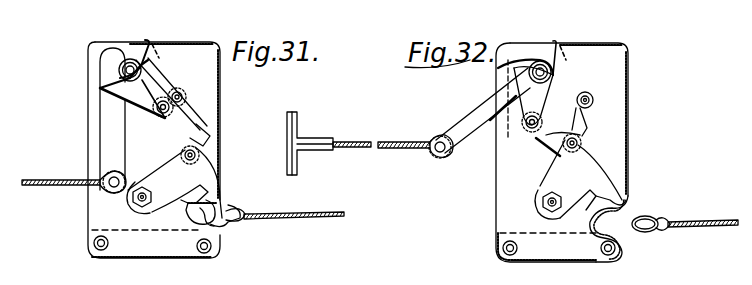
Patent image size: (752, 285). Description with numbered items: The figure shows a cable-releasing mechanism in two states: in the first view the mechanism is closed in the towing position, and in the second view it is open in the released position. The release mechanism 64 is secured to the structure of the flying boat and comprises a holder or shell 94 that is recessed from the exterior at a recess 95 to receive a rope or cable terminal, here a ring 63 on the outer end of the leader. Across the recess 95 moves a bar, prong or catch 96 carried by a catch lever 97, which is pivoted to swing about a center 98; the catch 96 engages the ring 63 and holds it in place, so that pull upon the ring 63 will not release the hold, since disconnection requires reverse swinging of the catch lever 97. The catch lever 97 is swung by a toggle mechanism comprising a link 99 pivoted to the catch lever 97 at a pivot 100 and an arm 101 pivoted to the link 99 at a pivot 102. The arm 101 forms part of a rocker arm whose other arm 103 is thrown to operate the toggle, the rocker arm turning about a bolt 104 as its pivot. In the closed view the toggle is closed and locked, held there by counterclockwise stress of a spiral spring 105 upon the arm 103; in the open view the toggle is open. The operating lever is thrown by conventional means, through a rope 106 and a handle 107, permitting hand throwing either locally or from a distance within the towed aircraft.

In FIG. 31, the ring 63 is at (218, 228).
In FIG. 32, the ring 63 is at (656, 221).
In FIG. 31, the release mechanism 64 is at (232, 109).
In FIG. 32, the release mechanism 64 is at (645, 99).
In FIG. 31, the holder or shell 94 is at (222, 157).
In FIG. 32, the holder or shell 94 is at (630, 129).
In FIG. 31, the recess 95 is at (206, 208).
In FIG. 32, the recess 95 is at (612, 256).
In FIG. 31, the catch 96 is at (224, 203).
In FIG. 32, the catch 96 is at (618, 206).
In FIG. 31, the catch lever 97 is at (174, 182).
In FIG. 32, the catch lever 97 is at (578, 176).
In FIG. 31, the pivot center 98 is at (138, 203).
In FIG. 32, the pivot center 98 is at (546, 206).
In FIG. 31, the link 99 is at (183, 108).
In FIG. 32, the link 99 is at (558, 118).
In FIG. 31, the pivot 100 is at (182, 152).
In FIG. 32, the pivot 100 is at (584, 137).
In FIG. 31, the arm 101 is at (145, 82).
In FIG. 32, the arm 101 is at (452, 156).
In FIG. 31, the pivot 102 is at (158, 113).
In FIG. 32, the pivot 102 is at (530, 133).
In FIG. 31, the arm 103 is at (112, 100).
In FIG. 32, the arm 103 is at (524, 98).
In FIG. 31, the bolt 104 is at (118, 70).
In FIG. 32, the bolt 104 is at (553, 72).
In FIG. 31, the spiral spring 105 is at (119, 34).
In FIG. 32, the spiral spring 105 is at (532, 58).
In FIG. 31, the rope 106 is at (43, 179).
In FIG. 32, the rope 106 is at (380, 137).
In FIG. 31, the handle 107 is at (297, 128).